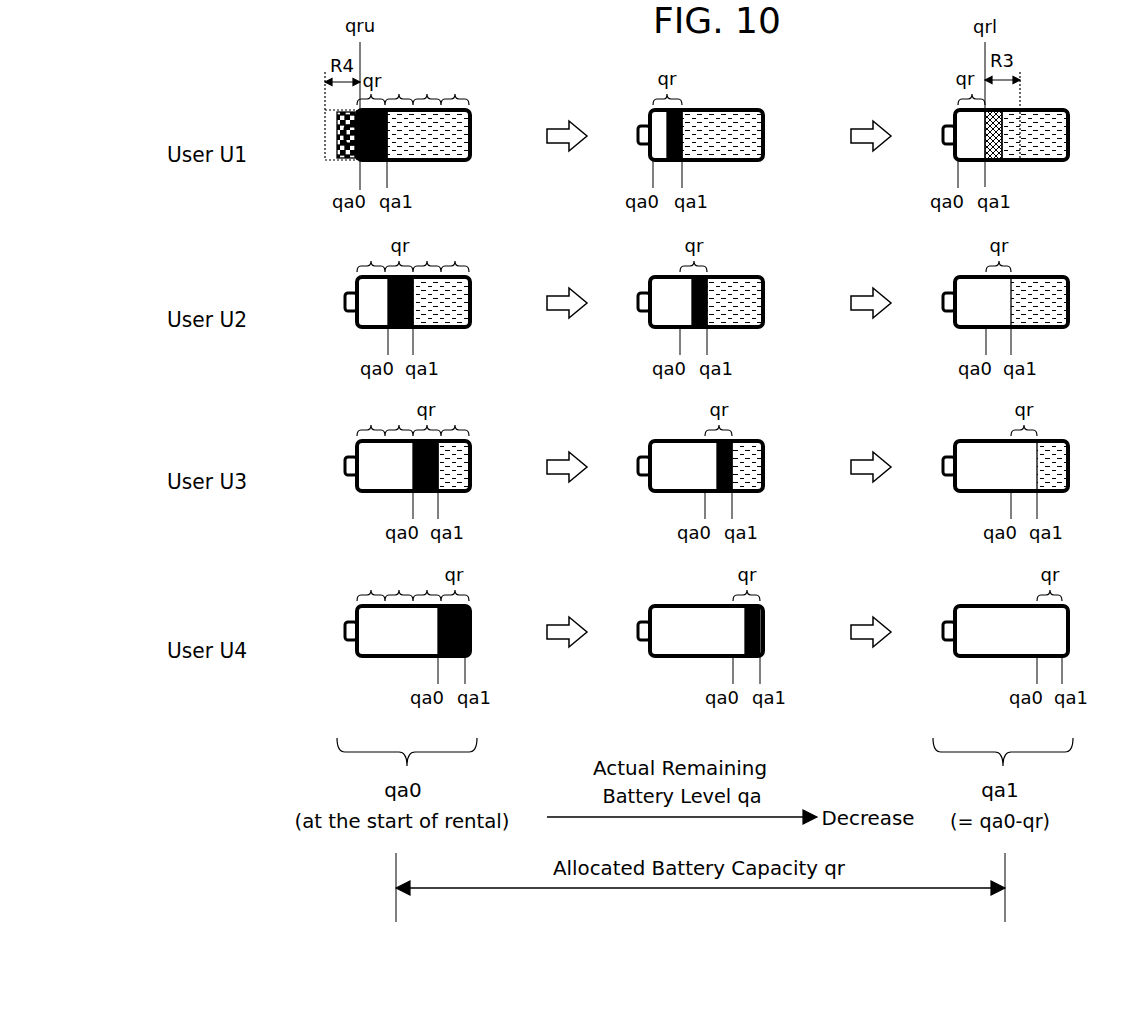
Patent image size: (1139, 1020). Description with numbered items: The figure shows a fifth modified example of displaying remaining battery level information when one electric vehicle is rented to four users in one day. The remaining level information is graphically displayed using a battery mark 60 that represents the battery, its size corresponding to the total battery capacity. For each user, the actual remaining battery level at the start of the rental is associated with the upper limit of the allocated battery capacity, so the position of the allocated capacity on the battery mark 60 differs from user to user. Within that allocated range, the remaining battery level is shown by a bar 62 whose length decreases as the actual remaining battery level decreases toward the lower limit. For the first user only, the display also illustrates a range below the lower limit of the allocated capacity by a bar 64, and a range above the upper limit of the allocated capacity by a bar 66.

The battery mark 60 is at (470, 110).
The bar 62 is at (375, 160).
The bar 64 is at (992, 160).
The bar 66 is at (345, 160).